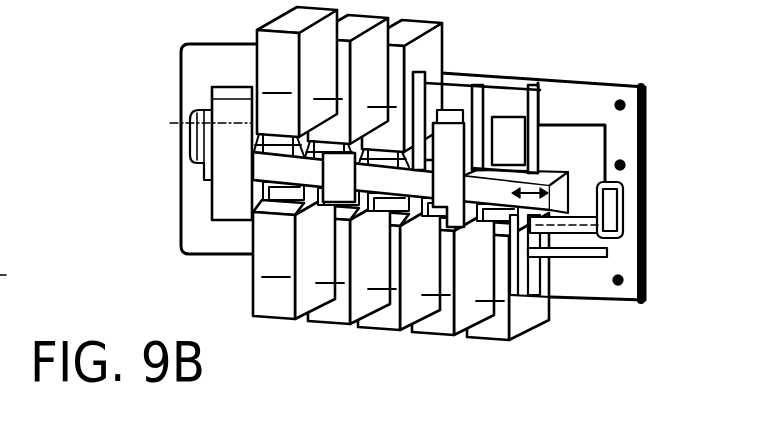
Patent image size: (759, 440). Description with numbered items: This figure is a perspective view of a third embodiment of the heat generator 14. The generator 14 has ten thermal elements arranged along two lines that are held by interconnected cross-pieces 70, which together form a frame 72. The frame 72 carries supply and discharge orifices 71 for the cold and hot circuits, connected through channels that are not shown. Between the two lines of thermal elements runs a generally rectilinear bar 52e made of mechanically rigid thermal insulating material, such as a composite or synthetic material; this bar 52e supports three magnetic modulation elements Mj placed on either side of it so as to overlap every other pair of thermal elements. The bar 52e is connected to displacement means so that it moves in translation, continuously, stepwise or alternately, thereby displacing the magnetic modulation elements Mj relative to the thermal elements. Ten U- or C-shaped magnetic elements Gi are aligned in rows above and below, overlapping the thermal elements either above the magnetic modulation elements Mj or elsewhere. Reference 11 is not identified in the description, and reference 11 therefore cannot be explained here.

The holder bracket 11 is at (508, 138).
The generator 14 is at (145, 228).
The bar 52e is at (277, 171).
The cross-pieces 70 is at (578, 102).
The supply and discharge orifices 71 is at (620, 286).
The frame 72 is at (655, 148).
The magnetic modulation elements Mj is at (447, 192).
The magnetic elements Gi is at (401, 173).